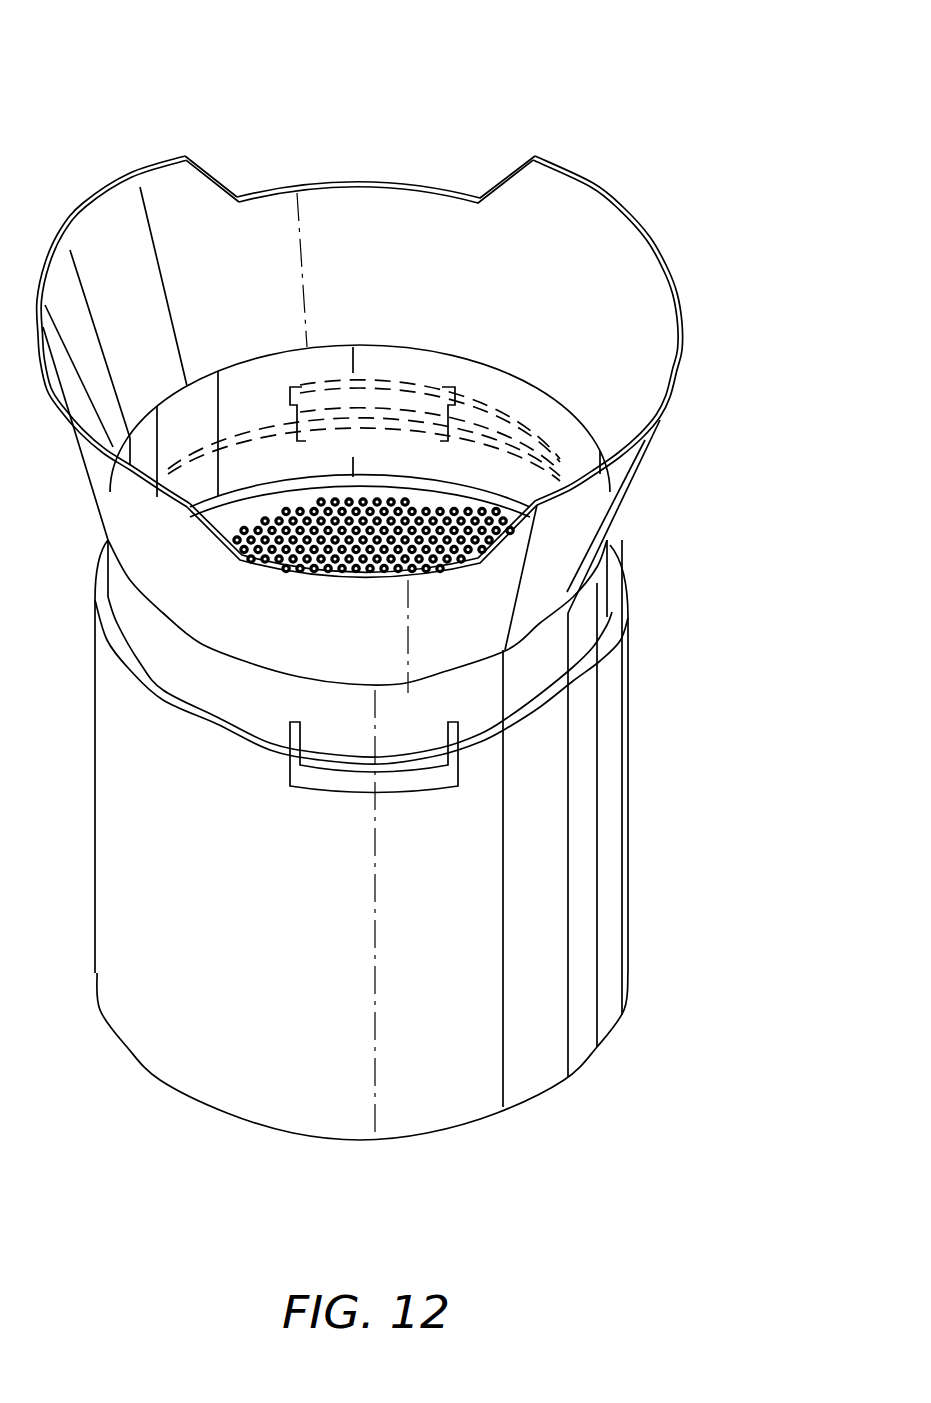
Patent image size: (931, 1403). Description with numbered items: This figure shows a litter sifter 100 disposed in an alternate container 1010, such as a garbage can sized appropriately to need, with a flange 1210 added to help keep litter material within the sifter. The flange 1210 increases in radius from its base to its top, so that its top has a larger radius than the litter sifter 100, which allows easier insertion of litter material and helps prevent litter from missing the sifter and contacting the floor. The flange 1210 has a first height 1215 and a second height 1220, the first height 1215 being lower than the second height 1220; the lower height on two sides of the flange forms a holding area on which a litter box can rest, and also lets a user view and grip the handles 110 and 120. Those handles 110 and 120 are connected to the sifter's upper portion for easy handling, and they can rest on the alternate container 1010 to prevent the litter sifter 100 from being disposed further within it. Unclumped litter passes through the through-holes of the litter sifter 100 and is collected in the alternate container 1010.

The flange 1210 is at (595, 187).
The first height 1215 is at (362, 182).
The second height 1220 is at (205, 163).
The litter sifter 100 is at (548, 660).
The handle 110 is at (452, 388).
The handle 120 is at (293, 770).
The alternate container 1010 is at (537, 880).